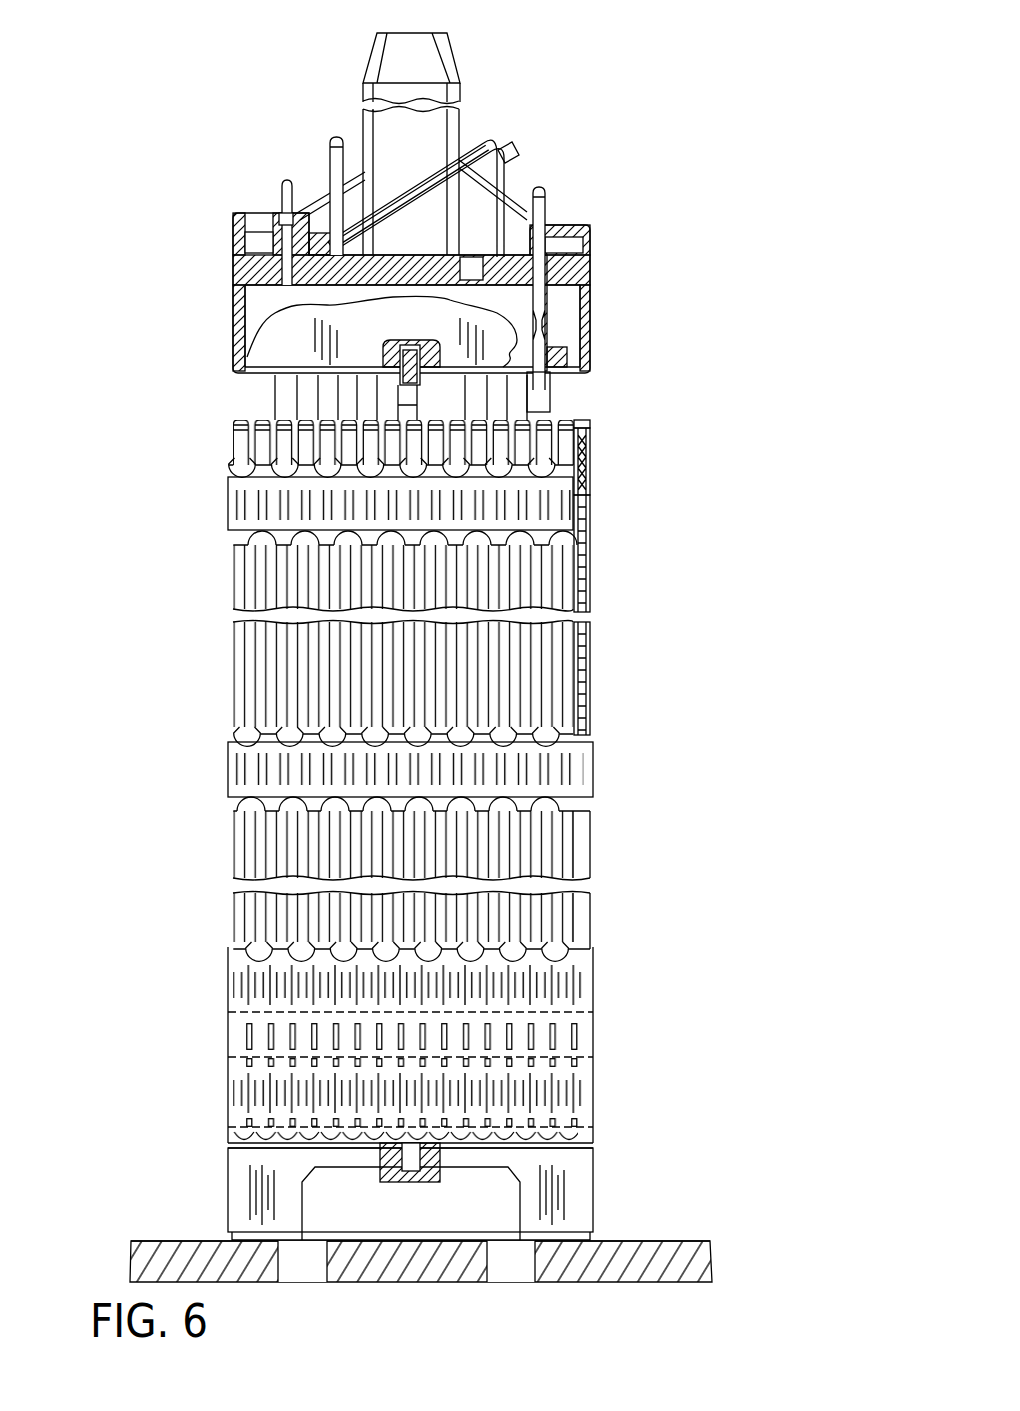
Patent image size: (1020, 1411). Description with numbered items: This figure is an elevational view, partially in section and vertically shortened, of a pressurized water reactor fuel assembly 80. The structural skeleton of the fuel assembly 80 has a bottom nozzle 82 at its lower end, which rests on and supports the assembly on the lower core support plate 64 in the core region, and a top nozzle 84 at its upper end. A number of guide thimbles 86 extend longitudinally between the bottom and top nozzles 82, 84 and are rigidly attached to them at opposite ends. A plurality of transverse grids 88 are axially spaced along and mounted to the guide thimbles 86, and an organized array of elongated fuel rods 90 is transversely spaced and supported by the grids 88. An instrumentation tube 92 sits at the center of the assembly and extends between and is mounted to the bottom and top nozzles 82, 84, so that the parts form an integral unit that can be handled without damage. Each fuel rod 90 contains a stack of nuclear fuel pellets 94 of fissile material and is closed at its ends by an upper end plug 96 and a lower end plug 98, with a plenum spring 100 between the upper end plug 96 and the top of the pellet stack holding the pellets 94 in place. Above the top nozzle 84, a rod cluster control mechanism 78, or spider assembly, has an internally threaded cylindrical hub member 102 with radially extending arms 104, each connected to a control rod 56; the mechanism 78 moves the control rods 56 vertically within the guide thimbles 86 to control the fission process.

The control rods 56 is at (598, 357).
The lower core support plate 64 is at (630, 1241).
The rod cluster control mechanism 78 is at (503, 137).
The fuel assembly 80 is at (676, 284).
The bottom nozzle 82 is at (596, 1187).
The top nozzle 84 is at (598, 250).
The guide thimbles 86 is at (272, 408).
The transverse grids 88 is at (233, 515).
The fuel rods 90 is at (235, 680).
The instrumentation tube 92 is at (406, 1145).
The nuclear fuel pellets 94 is at (590, 582).
The upper end plug 96 is at (590, 432).
The lower end plug 98 is at (598, 1120).
The plenum spring 100 is at (590, 490).
The cylindrical hub member 102 is at (460, 127).
The arms 104 is at (357, 153).